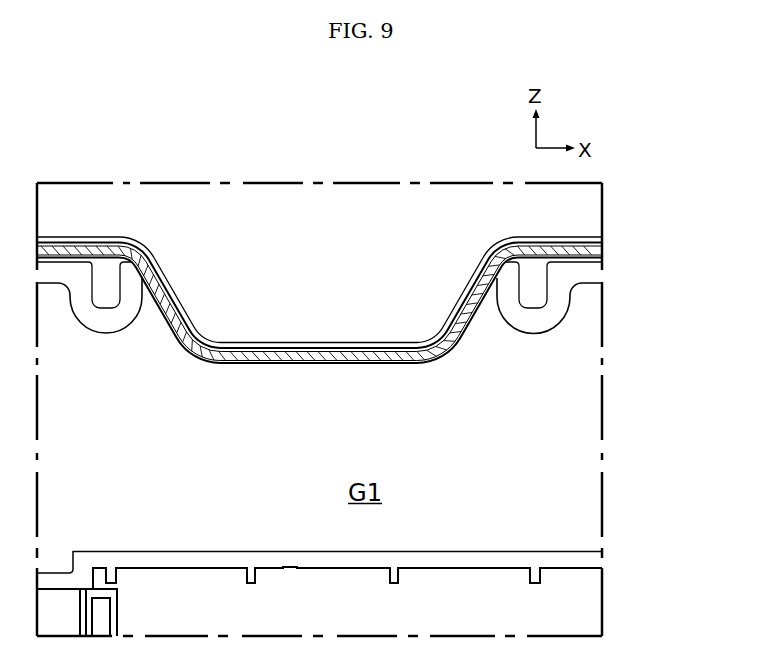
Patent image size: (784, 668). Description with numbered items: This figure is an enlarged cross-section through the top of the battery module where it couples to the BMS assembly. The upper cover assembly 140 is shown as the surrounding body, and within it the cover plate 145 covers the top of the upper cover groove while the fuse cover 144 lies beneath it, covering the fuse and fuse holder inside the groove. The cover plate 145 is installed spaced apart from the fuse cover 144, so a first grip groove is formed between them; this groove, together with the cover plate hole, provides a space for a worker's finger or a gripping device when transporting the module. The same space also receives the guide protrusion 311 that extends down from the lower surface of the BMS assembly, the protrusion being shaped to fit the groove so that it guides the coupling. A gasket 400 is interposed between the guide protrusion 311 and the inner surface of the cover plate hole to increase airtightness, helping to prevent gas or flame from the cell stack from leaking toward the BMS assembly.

The upper cover assembly 140 is at (624, 421).
The fuse cover 144 is at (488, 552).
The cover plate 145 is at (530, 322).
The guide protrusion 311 is at (310, 341).
The gasket 400 is at (430, 360).